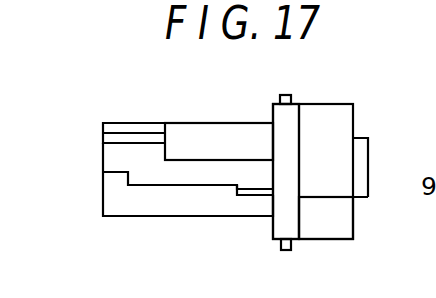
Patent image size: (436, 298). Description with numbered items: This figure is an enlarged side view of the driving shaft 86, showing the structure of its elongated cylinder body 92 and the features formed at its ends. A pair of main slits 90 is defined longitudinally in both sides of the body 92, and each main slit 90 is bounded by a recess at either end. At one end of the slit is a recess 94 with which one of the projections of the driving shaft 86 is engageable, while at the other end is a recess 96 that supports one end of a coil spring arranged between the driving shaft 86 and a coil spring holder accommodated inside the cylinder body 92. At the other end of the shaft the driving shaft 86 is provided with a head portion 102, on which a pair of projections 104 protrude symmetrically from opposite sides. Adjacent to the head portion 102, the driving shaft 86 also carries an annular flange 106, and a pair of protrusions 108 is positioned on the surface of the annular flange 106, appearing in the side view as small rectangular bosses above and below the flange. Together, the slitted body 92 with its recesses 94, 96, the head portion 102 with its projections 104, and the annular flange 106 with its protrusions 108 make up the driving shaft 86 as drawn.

The driving shaft 86 is at (124, 119).
The main slits 90 is at (167, 174).
The body 92 is at (205, 130).
The recess 94 is at (255, 180).
The recess 96 is at (110, 150).
The head portion 102 is at (343, 128).
The projections 104 is at (339, 222).
The annular flange 106 is at (293, 140).
The protrusions 108 is at (285, 96).